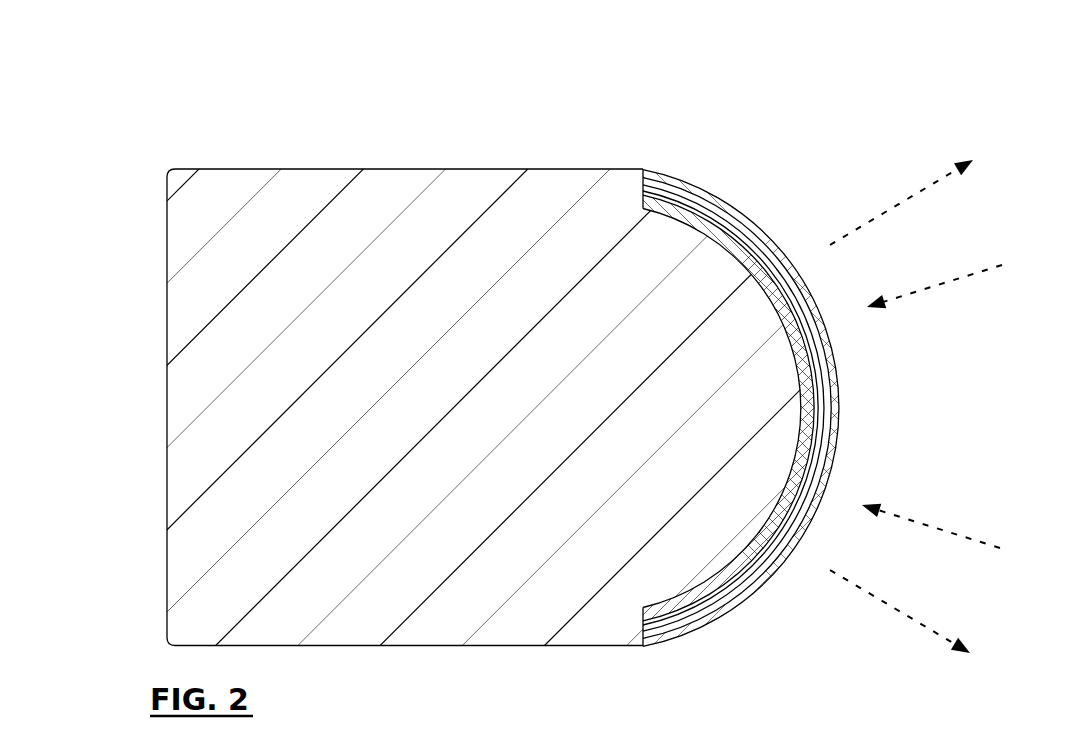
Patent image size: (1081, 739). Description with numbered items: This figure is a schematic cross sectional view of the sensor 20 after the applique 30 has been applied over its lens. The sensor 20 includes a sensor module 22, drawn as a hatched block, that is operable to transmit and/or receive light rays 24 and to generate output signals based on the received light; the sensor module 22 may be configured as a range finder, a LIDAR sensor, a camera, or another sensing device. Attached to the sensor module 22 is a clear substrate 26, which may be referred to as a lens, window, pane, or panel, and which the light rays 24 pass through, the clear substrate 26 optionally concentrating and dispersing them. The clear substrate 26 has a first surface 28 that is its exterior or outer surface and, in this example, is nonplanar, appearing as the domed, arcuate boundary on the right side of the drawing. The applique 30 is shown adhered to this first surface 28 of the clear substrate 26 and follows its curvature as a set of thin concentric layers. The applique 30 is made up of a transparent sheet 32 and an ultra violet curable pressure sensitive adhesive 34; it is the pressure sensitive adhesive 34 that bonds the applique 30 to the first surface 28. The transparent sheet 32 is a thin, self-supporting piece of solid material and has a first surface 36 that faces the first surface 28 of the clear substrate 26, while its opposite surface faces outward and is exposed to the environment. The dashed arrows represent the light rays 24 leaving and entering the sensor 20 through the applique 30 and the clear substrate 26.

The sensor 20 is at (526, 131).
The sensor module 22 is at (375, 168).
The light rays 24 is at (927, 292).
The clear substrate 26 is at (775, 305).
The first surface 28 is at (826, 368).
The applique 30 is at (739, 209).
The transparent sheet 32 is at (840, 433).
The ultra violet curable pressure sensitive adhesive 34 is at (782, 563).
The first surface 36 is at (745, 593).